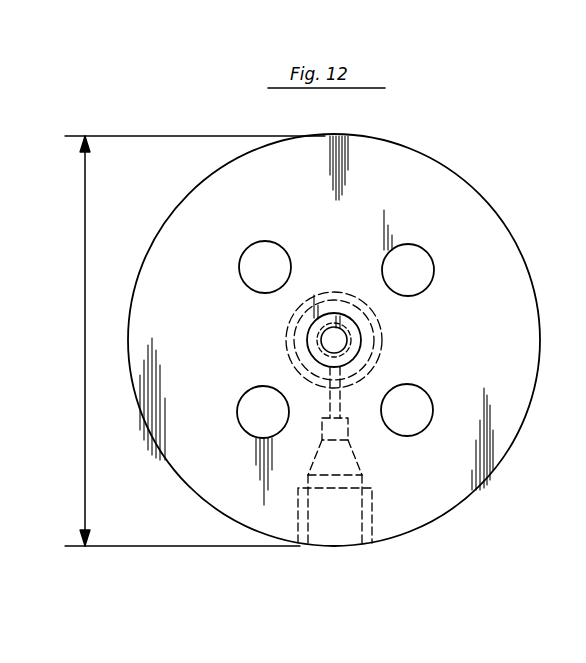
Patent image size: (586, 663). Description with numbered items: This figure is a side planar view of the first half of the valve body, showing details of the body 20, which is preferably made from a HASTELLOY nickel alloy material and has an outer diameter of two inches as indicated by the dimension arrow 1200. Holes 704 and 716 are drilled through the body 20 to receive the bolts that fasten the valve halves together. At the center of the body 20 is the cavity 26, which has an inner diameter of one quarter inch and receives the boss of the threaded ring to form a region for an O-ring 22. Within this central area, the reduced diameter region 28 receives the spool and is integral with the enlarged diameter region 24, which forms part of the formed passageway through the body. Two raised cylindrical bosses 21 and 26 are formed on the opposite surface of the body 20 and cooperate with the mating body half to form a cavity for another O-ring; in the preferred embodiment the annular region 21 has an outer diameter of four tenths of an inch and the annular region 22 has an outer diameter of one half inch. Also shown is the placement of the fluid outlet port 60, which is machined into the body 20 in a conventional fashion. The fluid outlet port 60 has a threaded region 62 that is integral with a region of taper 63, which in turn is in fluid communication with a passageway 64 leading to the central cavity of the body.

The body 20 is at (517, 245).
The arrow 1200 is at (86, 210).
The hole 716 is at (247, 249).
The hole 704 is at (411, 247).
The raised cylindrical boss 21 is at (334, 292).
The annular region 22 is at (292, 316).
The enlarged diameter region 24 is at (353, 340).
The cavity 26 is at (360, 352).
The reduced diameter region 28 is at (321, 341).
The fluid outlet port 60 is at (357, 473).
The threaded region 62 is at (372, 498).
The region of taper 63 is at (357, 460).
The passageway 64 is at (343, 402).